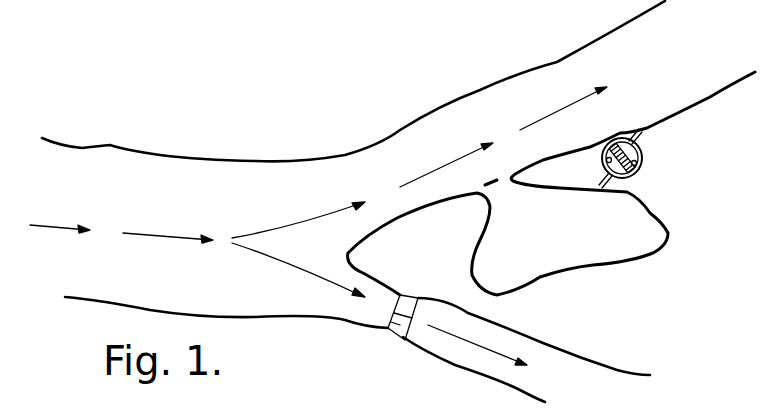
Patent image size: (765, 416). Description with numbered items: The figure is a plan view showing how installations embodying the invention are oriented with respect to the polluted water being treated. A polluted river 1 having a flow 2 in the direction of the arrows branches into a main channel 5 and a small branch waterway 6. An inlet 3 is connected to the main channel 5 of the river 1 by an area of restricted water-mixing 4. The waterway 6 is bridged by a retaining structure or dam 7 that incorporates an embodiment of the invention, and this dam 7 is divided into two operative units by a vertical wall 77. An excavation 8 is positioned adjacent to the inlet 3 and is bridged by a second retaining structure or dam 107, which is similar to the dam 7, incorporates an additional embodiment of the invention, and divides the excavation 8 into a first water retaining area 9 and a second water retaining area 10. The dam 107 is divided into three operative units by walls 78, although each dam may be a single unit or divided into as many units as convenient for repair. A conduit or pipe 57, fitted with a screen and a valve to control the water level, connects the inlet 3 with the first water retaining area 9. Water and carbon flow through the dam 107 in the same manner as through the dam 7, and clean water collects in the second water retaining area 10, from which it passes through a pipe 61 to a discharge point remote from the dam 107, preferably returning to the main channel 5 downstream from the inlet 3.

The polluted river 1 is at (228, 159).
The flow 2 is at (173, 234).
The inlet 3 is at (591, 266).
The area of restricted water-mixing 4 is at (493, 176).
The main channel 5 is at (557, 62).
The small branch waterway 6 is at (466, 370).
The retaining structure or dam 7 is at (396, 296).
The excavation 8 is at (622, 183).
The first water retaining area 9 is at (606, 158).
The second water retaining area 10 is at (643, 163).
The conduit or pipe 57 is at (597, 181).
The pipe 61 is at (643, 133).
The vertical wall 77 is at (392, 335).
The walls 78 is at (630, 157).
The retaining structure or dam 107 is at (637, 172).